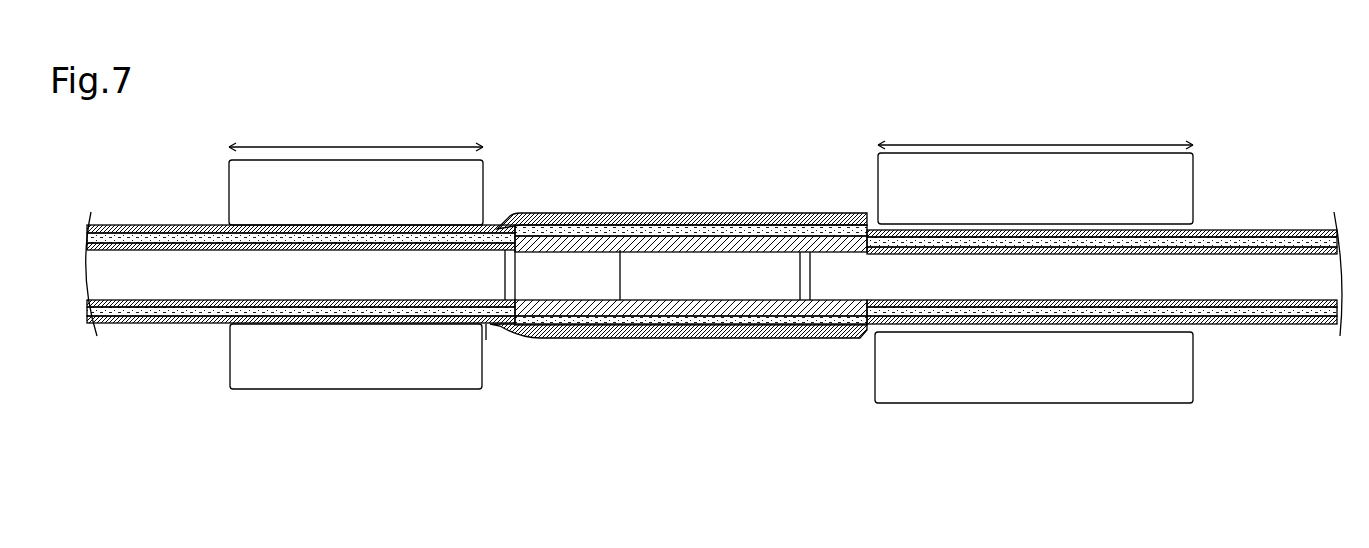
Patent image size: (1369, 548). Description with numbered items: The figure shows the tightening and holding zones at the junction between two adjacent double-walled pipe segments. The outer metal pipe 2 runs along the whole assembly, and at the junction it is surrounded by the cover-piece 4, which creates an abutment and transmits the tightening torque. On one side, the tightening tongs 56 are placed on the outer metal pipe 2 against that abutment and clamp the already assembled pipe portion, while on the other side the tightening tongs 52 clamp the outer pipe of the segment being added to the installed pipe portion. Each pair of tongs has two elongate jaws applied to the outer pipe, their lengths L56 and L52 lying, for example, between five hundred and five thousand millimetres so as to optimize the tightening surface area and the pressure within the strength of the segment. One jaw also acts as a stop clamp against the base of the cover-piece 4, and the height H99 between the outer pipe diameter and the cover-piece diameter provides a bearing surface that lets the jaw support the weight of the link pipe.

The outer metal pipe 2 is at (1278, 231).
The cover-piece 4 is at (689, 213).
The tightening tongs 52 is at (1033, 410).
The tightening tongs 56 is at (293, 405).
The jaw length of tightening tongs 52 L52 is at (1035, 133).
The jaw length of tightening tongs 56 L56 is at (356, 139).
The height between outer pipe diameter and cover-piece diameter H99 is at (488, 338).